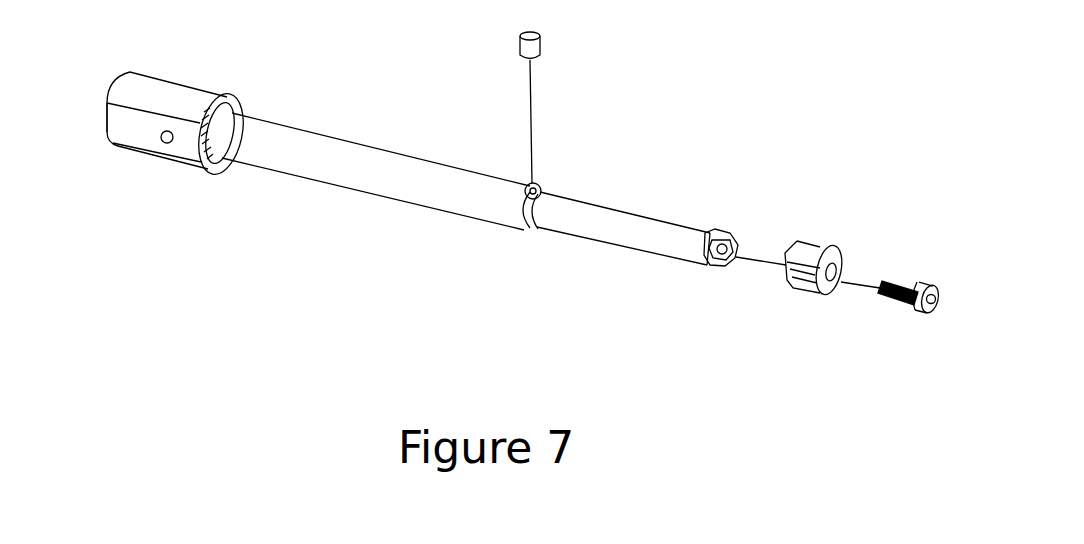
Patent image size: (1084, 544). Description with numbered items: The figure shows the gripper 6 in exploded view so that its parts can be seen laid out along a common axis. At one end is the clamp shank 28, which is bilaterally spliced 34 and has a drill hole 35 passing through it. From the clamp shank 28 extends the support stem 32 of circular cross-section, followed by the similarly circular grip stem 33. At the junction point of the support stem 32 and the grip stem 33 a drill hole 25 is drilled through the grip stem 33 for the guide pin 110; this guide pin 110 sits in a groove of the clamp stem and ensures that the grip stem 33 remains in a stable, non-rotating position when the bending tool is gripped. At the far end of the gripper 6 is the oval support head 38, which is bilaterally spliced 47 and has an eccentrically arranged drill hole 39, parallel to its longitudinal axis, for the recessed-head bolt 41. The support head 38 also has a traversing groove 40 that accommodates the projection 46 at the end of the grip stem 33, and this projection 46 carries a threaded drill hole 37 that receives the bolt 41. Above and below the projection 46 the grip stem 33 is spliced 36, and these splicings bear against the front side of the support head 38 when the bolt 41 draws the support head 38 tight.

The gripper 6 is at (436, 112).
The drill hole 25 is at (542, 189).
The clamp shank 28 is at (170, 82).
The support stem 32 is at (357, 141).
The grip stem 33 is at (588, 200).
The splicing 34 is at (102, 113).
The drill hole 35 is at (147, 145).
The splicing 36 is at (718, 236).
The threaded drill hole 37 is at (735, 243).
The support head 38 is at (812, 240).
The drill hole 39 is at (837, 290).
The traversing groove 40 is at (788, 282).
The recessed-head bolt 41 is at (922, 282).
The projection 46 is at (710, 233).
The splicing 47 is at (806, 286).
The guide pin 110 is at (542, 43).